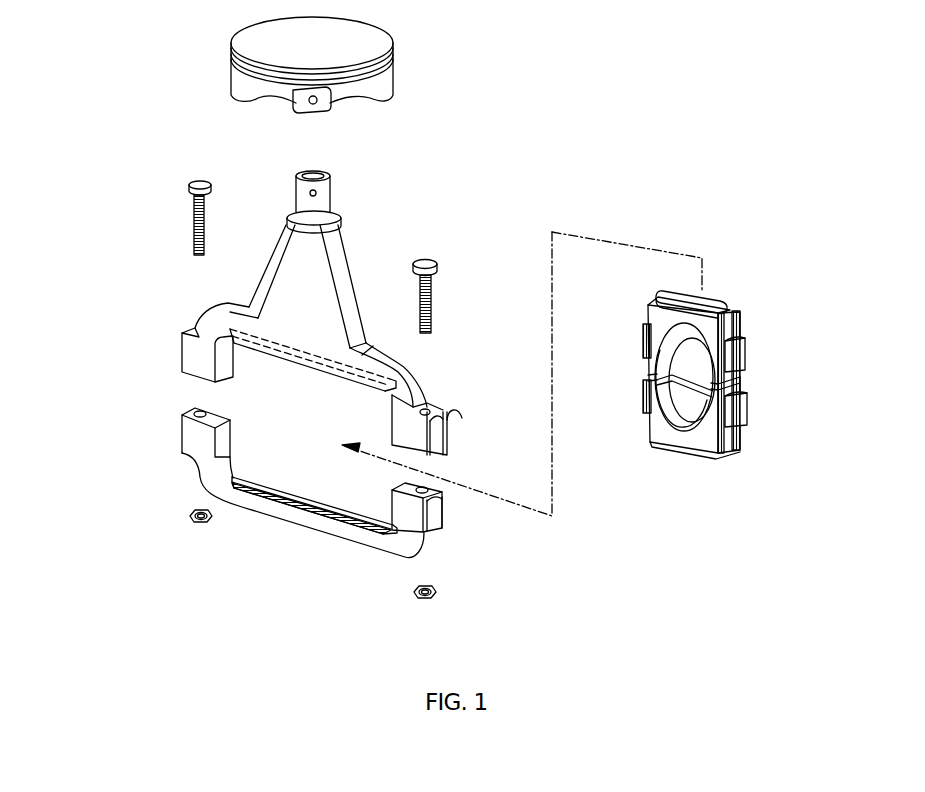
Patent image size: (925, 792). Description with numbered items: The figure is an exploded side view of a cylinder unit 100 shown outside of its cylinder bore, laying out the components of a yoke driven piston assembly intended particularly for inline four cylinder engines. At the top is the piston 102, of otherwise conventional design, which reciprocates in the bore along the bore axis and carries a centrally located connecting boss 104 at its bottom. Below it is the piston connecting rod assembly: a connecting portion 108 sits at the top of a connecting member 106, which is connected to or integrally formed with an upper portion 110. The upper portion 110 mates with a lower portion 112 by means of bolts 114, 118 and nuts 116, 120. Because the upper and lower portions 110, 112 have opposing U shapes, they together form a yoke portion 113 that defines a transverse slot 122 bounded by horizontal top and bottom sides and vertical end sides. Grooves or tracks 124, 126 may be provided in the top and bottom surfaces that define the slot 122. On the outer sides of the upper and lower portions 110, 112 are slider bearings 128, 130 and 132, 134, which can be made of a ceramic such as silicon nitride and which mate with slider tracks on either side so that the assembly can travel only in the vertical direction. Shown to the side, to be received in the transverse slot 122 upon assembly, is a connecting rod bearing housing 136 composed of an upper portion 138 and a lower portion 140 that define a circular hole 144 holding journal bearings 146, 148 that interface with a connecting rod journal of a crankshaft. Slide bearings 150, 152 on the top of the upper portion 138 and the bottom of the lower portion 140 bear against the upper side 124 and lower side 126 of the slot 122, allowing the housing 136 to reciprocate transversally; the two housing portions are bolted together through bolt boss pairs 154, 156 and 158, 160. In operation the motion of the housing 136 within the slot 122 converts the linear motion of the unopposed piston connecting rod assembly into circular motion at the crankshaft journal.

The cylinder unit 100 is at (822, 48).
The piston 102 is at (393, 62).
The connecting boss 104 is at (300, 108).
The connecting member 106 is at (347, 270).
The connecting portion 108 is at (331, 192).
The upper portion 110 is at (252, 310).
The lower portion 112 is at (268, 520).
The yoke portion 113 is at (110, 490).
The bolt 114 is at (195, 178).
The nut 116 is at (192, 517).
The bolt 118 is at (437, 262).
The nut 120 is at (437, 590).
The transverse slot 122 is at (325, 434).
The groove or track 124 is at (303, 362).
The groove or track 126 is at (247, 478).
The slider bearing 128 is at (185, 347).
The slider bearing 130 is at (183, 427).
The slider bearing 132 is at (445, 418).
The slider bearing 134 is at (440, 525).
The connecting rod bearing housing 136 is at (862, 260).
The upper portion 138 is at (744, 326).
The lower portion 140 is at (733, 456).
The circular hole 144 is at (714, 393).
The journal bearing 146 is at (740, 385).
The journal bearing 148 is at (656, 375).
The slide bearing 150 is at (720, 302).
The slide bearing 152 is at (692, 456).
The bolt boss 154 is at (647, 340).
The bolt boss 156 is at (647, 400).
The bolt boss 158 is at (748, 366).
The bolt boss 160 is at (745, 422).